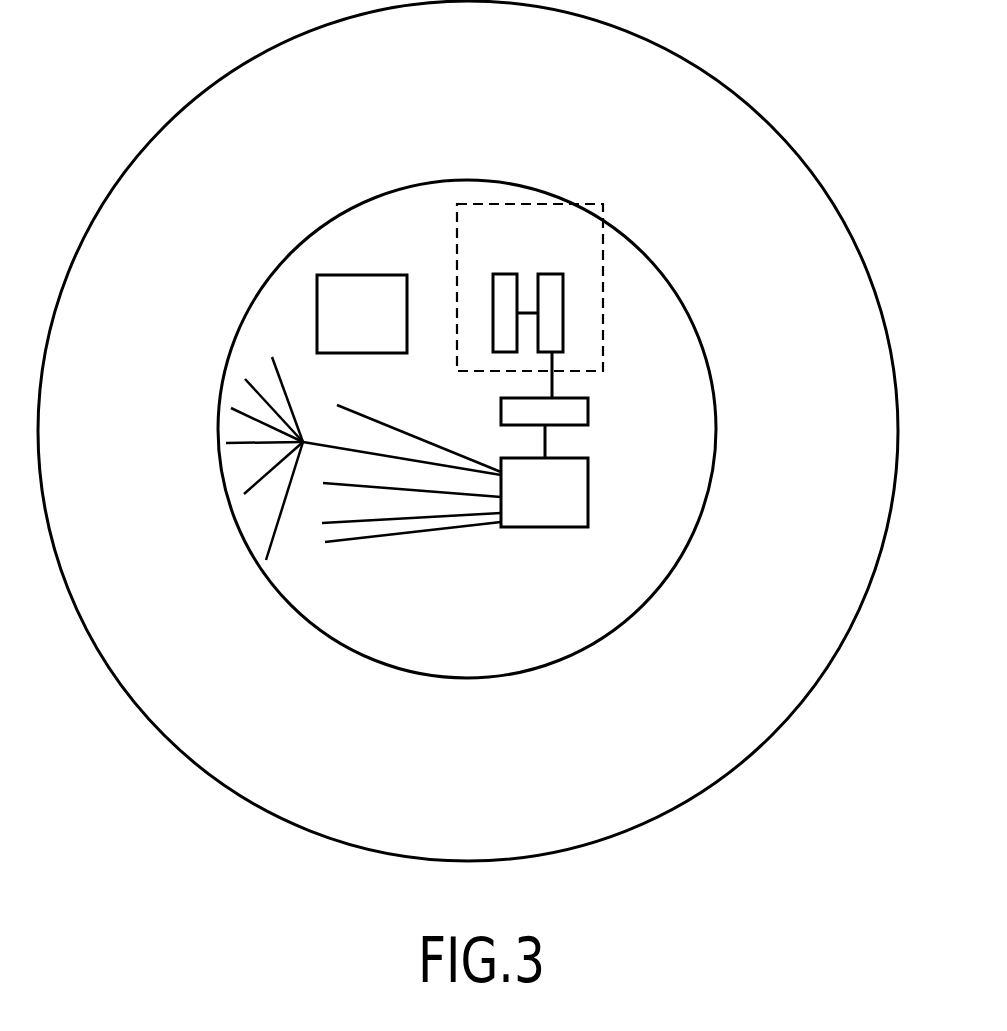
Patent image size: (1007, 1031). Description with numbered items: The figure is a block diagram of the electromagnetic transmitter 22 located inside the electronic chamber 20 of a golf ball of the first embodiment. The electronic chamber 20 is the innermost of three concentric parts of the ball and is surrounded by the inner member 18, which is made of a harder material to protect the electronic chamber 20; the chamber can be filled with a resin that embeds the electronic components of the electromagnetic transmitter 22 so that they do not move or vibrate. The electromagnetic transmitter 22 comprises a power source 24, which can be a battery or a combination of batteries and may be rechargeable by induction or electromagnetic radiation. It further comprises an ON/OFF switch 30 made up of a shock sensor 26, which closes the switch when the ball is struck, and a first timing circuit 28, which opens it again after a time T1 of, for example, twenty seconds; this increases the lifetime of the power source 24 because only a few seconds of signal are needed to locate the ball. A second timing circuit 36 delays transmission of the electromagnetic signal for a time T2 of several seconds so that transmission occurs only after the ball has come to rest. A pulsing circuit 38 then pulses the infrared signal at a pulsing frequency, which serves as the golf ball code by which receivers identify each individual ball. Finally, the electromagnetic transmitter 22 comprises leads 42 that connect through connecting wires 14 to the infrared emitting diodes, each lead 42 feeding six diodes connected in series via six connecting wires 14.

The connecting wires 14 is at (277, 535).
The inner member 18 is at (800, 156).
The electronic chamber 20 is at (706, 357).
The electromagnetic transmitter 22 is at (491, 502).
The power source 24 is at (347, 275).
The shock sensor 26 is at (505, 274).
The first timing circuit 28 is at (547, 274).
The ON/OFF switch 30 is at (530, 261).
The second timing circuit 36 is at (588, 410).
The pulsing circuit 38 is at (588, 498).
The leads 42 is at (442, 447).